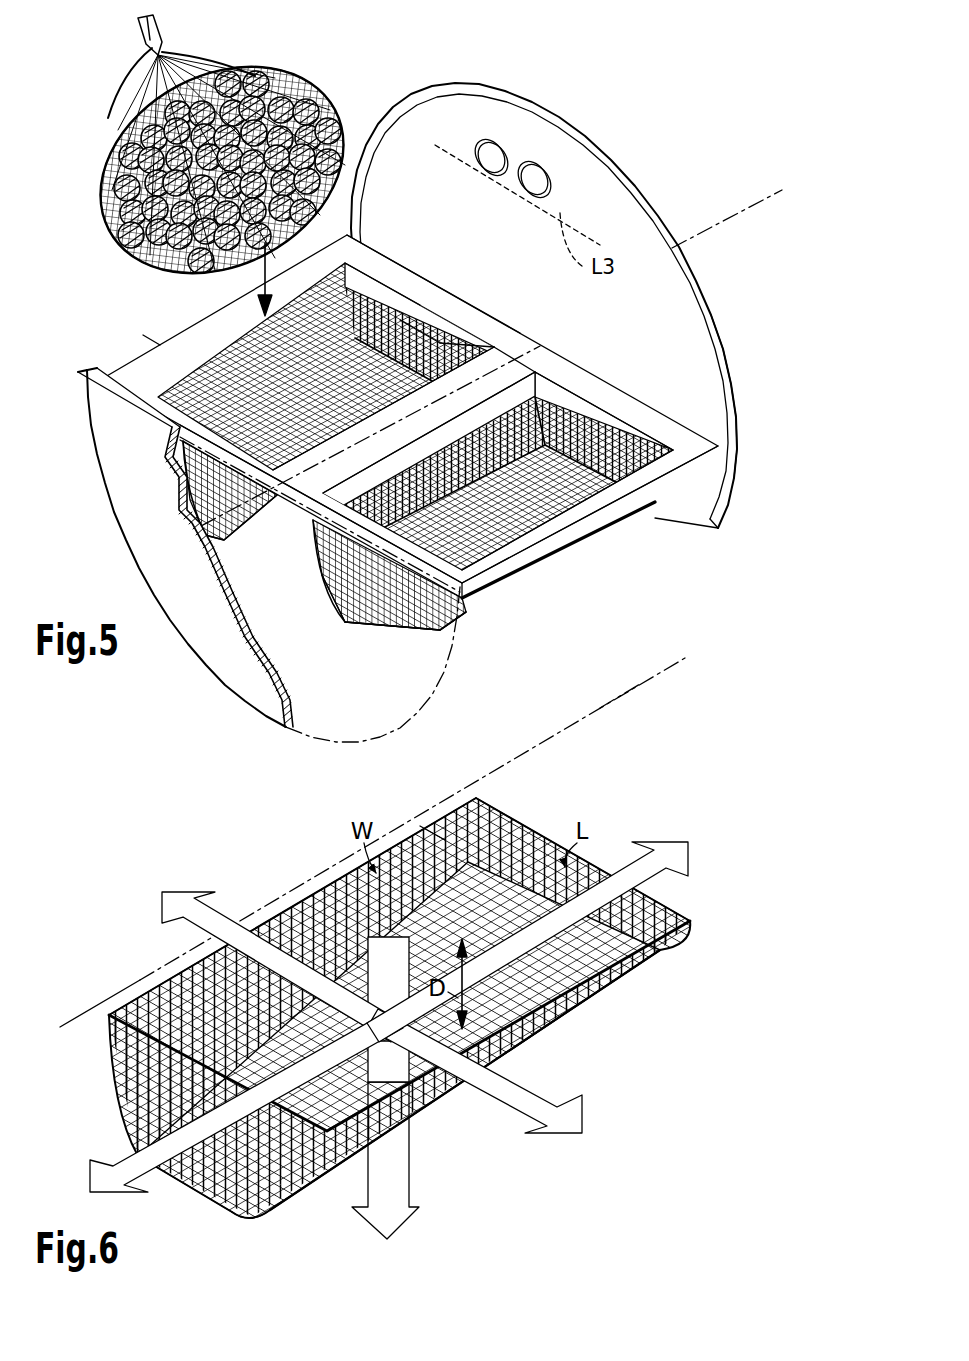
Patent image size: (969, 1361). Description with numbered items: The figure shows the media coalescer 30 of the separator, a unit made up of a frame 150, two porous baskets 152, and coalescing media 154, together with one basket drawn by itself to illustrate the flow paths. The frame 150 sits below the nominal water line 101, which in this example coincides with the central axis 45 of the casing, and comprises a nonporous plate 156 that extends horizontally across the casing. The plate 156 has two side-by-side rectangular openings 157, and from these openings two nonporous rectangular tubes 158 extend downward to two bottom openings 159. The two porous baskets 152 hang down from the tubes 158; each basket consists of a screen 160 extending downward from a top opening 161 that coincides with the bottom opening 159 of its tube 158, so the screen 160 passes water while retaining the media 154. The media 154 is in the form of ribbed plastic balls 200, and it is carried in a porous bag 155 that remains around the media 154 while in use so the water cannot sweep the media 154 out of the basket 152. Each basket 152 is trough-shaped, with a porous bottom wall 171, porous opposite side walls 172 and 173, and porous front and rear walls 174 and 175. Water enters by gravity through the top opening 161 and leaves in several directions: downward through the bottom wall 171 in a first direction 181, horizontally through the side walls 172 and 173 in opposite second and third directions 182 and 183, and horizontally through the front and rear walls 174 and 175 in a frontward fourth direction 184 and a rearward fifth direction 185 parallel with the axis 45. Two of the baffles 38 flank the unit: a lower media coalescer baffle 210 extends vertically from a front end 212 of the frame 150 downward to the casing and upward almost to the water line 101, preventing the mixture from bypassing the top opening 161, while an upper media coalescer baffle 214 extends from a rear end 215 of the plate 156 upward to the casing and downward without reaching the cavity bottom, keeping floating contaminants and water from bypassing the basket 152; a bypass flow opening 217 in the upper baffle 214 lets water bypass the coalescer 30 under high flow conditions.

In FIG. 5, the media coalescer 30 is at (141, 334).
In FIG. 5, the baffles 38 is at (704, 298).
In FIG. 5, the central axis 45 is at (741, 200).
In FIG. 6, the central axis 45 is at (608, 705).
In FIG. 5, the nominal water line 101 is at (710, 223).
In FIG. 6, the nominal water line 101 is at (522, 756).
In FIG. 5, the frame 150 is at (358, 252).
In FIG. 5, the porous baskets 152 is at (323, 568).
In FIG. 6, the porous baskets 152 is at (633, 1000).
In FIG. 5, the coalescing media 154 is at (211, 164).
In FIG. 5, the porous bag 155 is at (135, 118).
In FIG. 5, the nonporous plate 156 is at (380, 290).
In FIG. 5, the rectangular openings 157 is at (402, 291).
In FIG. 5, the rectangular tubes 158 is at (416, 338).
In FIG. 5, the bottom openings 159 is at (461, 340).
In FIG. 5, the screen 160 is at (500, 348).
In FIG. 5, the top opening 161 is at (522, 342).
In FIG. 6, the top opening 161 is at (434, 828).
In FIG. 5, the bottom wall 171 is at (375, 643).
In FIG. 6, the bottom wall 171 is at (198, 1195).
In FIG. 5, the side wall 172 is at (560, 430).
In FIG. 6, the side wall 172 is at (160, 972).
In FIG. 5, the side wall 173 is at (450, 622).
In FIG. 6, the side wall 173 is at (563, 1027).
In FIG. 5, the front wall 174 is at (345, 612).
In FIG. 6, the front wall 174 is at (220, 1190).
In FIG. 5, the rear wall 175 is at (627, 457).
In FIG. 6, the rear wall 175 is at (690, 913).
In FIG. 6, the first direction 181 is at (397, 1175).
In FIG. 6, the second direction 182 is at (207, 930).
In FIG. 6, the third direction 183 is at (530, 1100).
In FIG. 6, the fourth direction 184 is at (130, 1170).
In FIG. 6, the fifth direction 185 is at (647, 870).
In FIG. 5, the balls 200 is at (211, 164).
In FIG. 5, the lower media coalescer baffle 210 is at (138, 543).
In FIG. 5, the front end 212 is at (490, 598).
In FIG. 5, the upper media coalescer baffle 214 is at (722, 340).
In FIG. 5, the rear end 215 is at (707, 437).
In FIG. 5, the bypass flow opening 217 is at (518, 168).